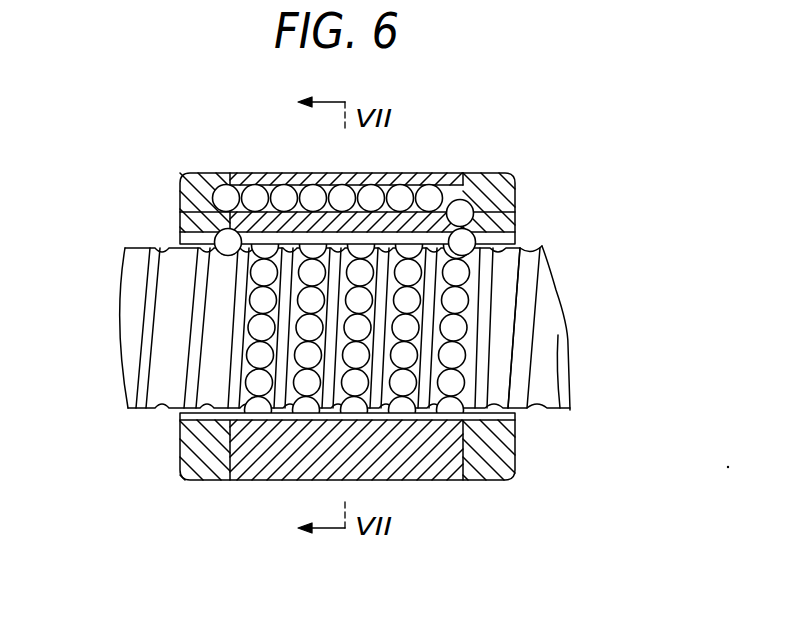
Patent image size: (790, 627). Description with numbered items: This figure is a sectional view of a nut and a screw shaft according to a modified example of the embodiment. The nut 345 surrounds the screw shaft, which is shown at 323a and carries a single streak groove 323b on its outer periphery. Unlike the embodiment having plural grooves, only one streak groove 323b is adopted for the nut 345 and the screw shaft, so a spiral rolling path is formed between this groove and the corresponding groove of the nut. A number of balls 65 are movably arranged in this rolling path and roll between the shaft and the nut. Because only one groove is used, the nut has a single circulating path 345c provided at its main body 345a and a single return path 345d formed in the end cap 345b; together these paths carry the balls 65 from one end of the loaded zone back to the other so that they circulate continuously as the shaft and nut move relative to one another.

The nut 345 is at (353, 333).
The main body 345a is at (447, 481).
The end cap 345b is at (180, 210).
The circulating path 345c is at (283, 190).
The return path 345d is at (180, 187).
The balls 65 is at (262, 302).
The screw shaft 323a is at (497, 372).
The streak groove 323b is at (512, 365).